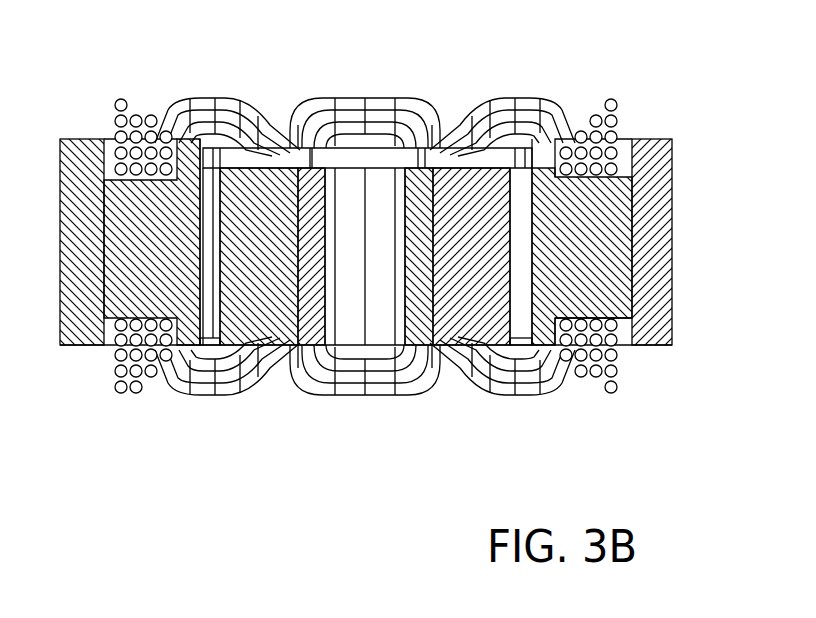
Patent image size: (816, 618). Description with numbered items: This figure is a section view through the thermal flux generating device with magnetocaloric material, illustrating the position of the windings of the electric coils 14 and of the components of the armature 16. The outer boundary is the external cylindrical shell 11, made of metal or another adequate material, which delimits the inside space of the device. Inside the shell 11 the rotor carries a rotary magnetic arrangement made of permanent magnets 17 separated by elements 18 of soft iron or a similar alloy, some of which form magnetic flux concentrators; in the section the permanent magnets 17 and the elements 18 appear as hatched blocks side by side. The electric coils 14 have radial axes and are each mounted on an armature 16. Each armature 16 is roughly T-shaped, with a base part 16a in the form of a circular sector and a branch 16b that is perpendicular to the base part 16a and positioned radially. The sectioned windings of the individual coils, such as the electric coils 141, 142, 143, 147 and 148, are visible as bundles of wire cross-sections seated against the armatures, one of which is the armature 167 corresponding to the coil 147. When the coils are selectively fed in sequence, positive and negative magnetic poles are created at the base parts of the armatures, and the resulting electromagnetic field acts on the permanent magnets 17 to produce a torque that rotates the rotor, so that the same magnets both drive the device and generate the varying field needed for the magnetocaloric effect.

The external cylindrical shell 11 is at (62, 348).
The electric coil 14 is at (112, 96).
The armature 16 is at (620, 172).
The base part 16a is at (570, 105).
The branch 16b is at (622, 223).
The permanent magnet 17 is at (430, 170).
The element made out of soft iron 18 is at (243, 183).
The electric coil 141 is at (353, 392).
The electric coil 142 is at (202, 392).
The electric coil 143 is at (117, 392).
The electric coil 147 is at (592, 380).
The electric coil 148 is at (493, 390).
The armature 167 is at (607, 293).